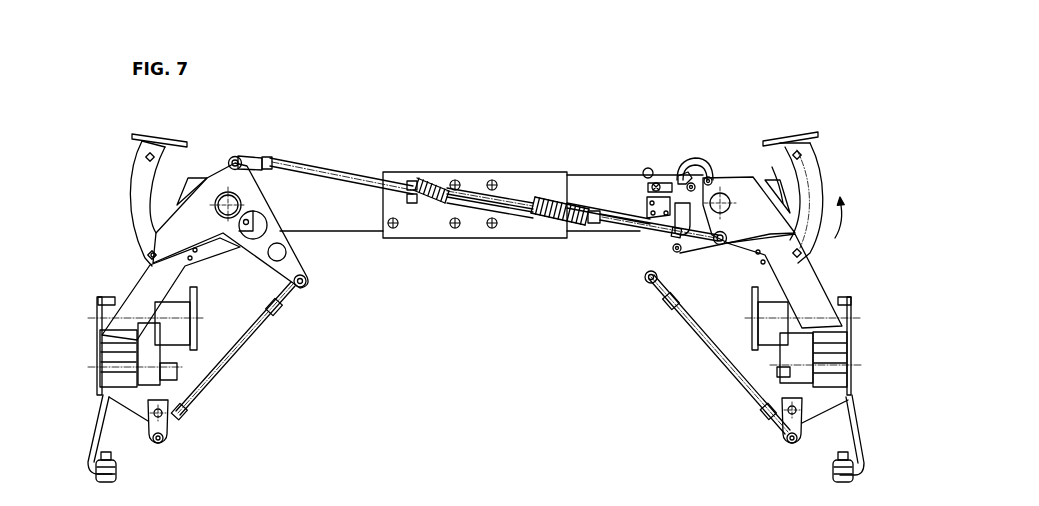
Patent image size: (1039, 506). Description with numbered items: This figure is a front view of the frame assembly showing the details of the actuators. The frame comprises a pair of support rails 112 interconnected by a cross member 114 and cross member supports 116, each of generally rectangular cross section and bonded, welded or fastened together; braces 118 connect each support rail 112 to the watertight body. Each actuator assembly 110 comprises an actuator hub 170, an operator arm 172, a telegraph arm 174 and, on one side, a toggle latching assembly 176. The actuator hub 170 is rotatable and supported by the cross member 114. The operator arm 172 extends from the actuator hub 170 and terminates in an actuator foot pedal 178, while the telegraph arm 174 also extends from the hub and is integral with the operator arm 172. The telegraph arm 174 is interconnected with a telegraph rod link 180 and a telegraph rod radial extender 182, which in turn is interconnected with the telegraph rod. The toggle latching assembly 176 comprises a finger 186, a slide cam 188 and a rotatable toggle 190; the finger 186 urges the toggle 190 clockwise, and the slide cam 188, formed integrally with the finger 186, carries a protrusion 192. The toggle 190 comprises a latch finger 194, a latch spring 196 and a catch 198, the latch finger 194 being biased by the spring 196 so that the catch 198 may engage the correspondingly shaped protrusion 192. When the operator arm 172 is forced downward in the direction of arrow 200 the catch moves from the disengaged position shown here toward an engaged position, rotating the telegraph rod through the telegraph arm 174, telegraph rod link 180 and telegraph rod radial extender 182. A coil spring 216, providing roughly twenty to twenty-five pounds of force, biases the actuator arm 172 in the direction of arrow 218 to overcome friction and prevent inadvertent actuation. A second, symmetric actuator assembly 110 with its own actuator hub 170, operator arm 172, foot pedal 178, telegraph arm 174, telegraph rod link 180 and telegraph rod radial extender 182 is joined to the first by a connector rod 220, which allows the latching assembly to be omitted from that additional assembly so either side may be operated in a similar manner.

The actuator assembly 110 is at (842, 203).
The support rail 112 is at (103, 345).
The cross member 114 is at (335, 225).
The cross member support 116 is at (135, 293).
The brace 118 is at (95, 426).
The actuator hub 170 is at (223, 191).
The operator arm 172 is at (132, 175).
The telegraph arm 174 is at (262, 250).
The toggle latching assembly 176 is at (673, 184).
The actuator foot pedal 178 is at (150, 133).
The telegraph rod link 180 is at (217, 378).
The telegraph rod radial extender 182 is at (150, 430).
The finger 186 is at (695, 158).
The slide cam 188 is at (692, 215).
The toggle 190 is at (640, 192).
The protrusion 192 is at (683, 210).
The latch finger 194 is at (680, 177).
The latch spring 196 is at (655, 177).
The catch 198 is at (690, 187).
The arrow 200 is at (786, 204).
The coil spring 216 is at (433, 183).
The arrow 218 is at (838, 233).
The connector rod 220 is at (311, 172).